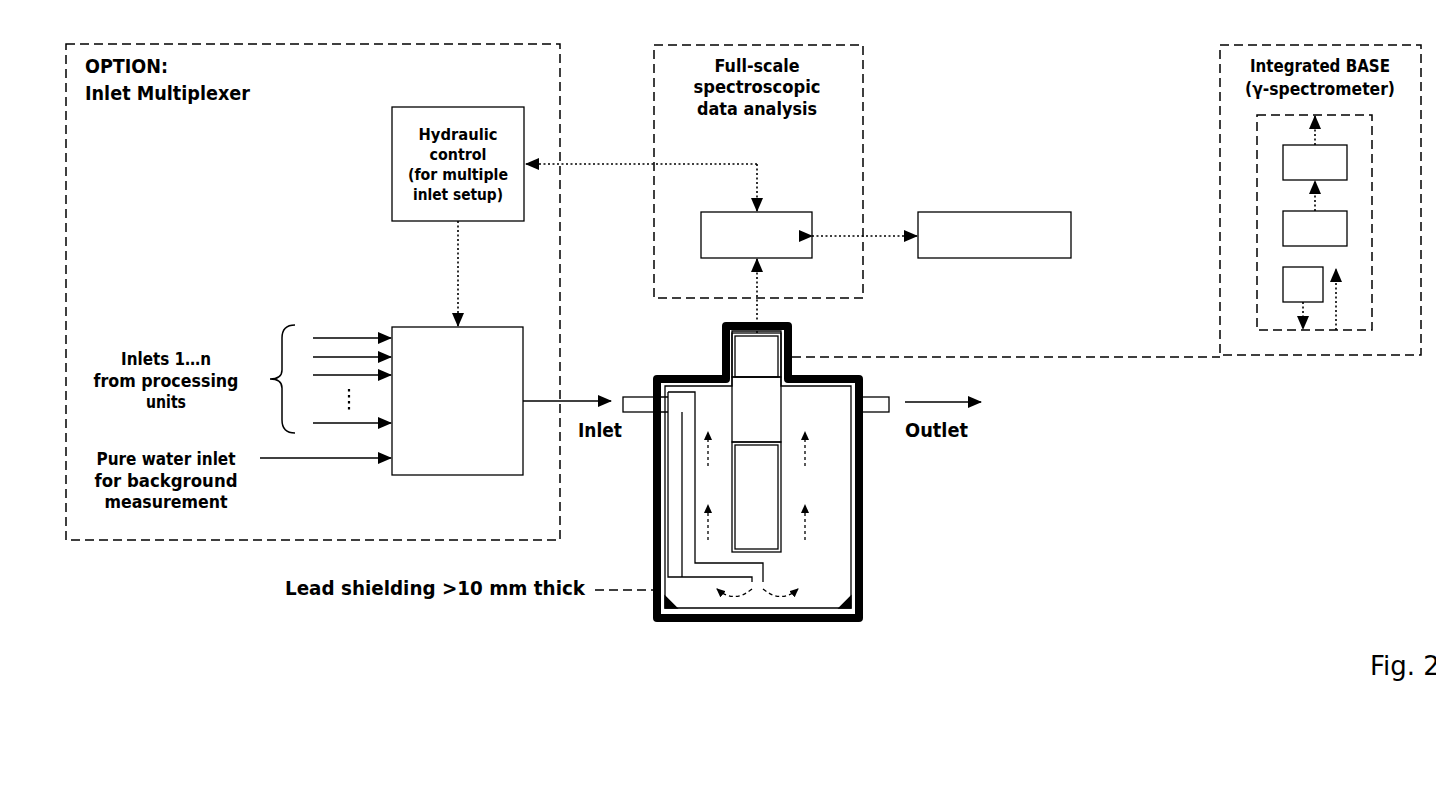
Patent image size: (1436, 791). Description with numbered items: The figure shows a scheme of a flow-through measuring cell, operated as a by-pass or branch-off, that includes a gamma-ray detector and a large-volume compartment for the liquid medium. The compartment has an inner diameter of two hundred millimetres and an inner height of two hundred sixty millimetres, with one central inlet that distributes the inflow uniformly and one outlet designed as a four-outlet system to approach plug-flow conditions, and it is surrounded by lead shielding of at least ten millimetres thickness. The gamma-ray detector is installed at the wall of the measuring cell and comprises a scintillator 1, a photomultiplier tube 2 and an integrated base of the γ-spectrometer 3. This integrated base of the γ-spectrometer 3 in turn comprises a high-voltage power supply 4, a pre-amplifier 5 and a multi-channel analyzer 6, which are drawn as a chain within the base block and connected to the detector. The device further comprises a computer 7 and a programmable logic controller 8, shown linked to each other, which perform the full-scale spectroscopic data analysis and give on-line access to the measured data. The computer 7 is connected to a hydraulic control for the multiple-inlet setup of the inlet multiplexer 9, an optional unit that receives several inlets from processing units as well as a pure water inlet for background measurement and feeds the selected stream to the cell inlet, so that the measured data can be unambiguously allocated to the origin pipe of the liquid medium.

The scintillator 1 is at (756, 497).
The photomultiplier tube 2 is at (756, 409).
The integrated base of the γ-spectrometer 3 is at (756, 355).
The high-voltage power supply 4 is at (1303, 284).
The pre-amplifier 5 is at (1315, 228).
The multi-channel analyzer 6 is at (1315, 162).
The computer 7 is at (756, 235).
The programmable logic controller 8 is at (994, 235).
The inlet multiplexer 9 is at (457, 401).